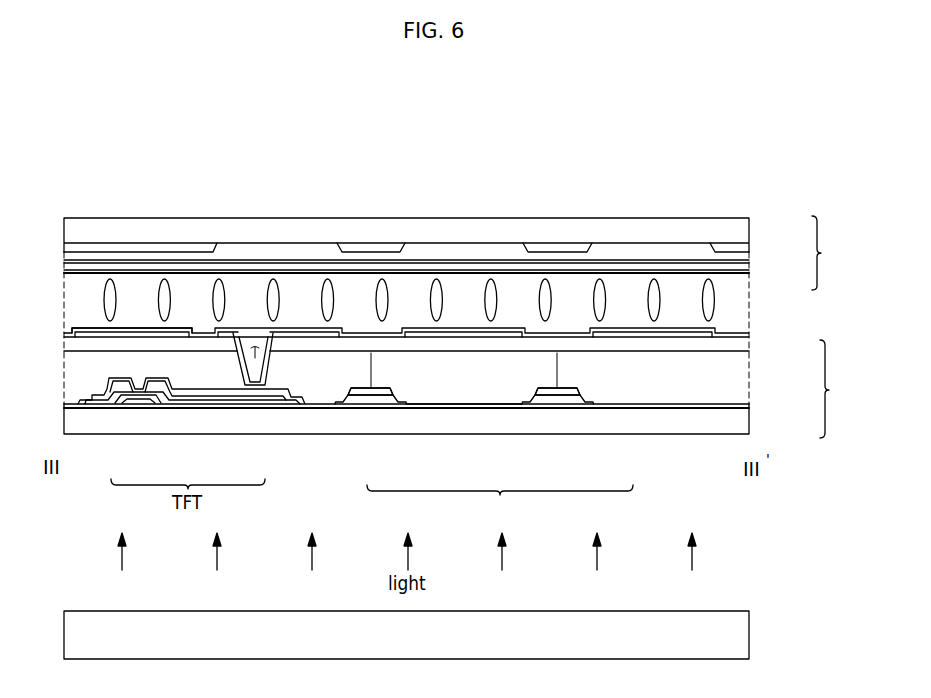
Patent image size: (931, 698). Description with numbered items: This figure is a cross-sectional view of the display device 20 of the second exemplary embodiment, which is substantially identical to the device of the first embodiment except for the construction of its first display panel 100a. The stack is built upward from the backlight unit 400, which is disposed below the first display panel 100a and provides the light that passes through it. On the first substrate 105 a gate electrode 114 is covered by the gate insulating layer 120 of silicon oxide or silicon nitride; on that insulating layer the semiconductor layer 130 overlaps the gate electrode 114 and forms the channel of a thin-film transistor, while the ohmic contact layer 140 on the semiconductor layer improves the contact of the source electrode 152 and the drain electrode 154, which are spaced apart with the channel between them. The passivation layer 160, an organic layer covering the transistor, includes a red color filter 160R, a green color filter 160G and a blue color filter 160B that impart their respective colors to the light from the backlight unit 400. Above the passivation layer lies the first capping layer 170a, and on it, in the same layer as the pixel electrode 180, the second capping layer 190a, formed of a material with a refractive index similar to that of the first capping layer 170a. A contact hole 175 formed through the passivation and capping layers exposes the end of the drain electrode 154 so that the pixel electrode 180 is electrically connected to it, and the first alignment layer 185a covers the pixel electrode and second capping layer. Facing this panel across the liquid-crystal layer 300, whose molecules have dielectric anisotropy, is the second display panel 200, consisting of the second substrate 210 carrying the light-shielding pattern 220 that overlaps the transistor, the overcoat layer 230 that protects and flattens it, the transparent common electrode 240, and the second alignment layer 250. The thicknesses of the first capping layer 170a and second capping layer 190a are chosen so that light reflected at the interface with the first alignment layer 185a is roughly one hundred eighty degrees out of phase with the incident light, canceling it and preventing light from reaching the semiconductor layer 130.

The display device 20 is at (747, 148).
The second substrate 210 is at (749, 225).
The light-shielding pattern 220 is at (749, 250).
The overcoat layer 230 is at (749, 261).
The common electrode 240 is at (749, 268).
The second alignment layer 250 is at (749, 273).
The liquid-crystal layer 300 is at (749, 321).
The first alignment layer 185a is at (749, 335).
The second capping layer 190a is at (85, 334).
The first capping layer 170a is at (749, 347).
The contact hole 175 is at (257, 386).
The pixel electrode 180 is at (700, 343).
The gate insulating layer 120 is at (749, 405).
The first substrate 105 is at (749, 423).
The second display panel 200 is at (833, 253).
The first display panel 100a is at (847, 389).
The semiconductor layer 130 is at (105, 404).
The ohmic contact layer 140 is at (95, 398).
The source electrode 152 is at (118, 408).
The gate electrode 114 is at (143, 408).
The drain electrode 154 is at (170, 404).
The red color filter 160R is at (327, 398).
The green color filter 160G is at (488, 395).
The blue color filter 160B is at (613, 395).
The passivation layer 160 is at (500, 502).
The backlight unit 400 is at (749, 632).